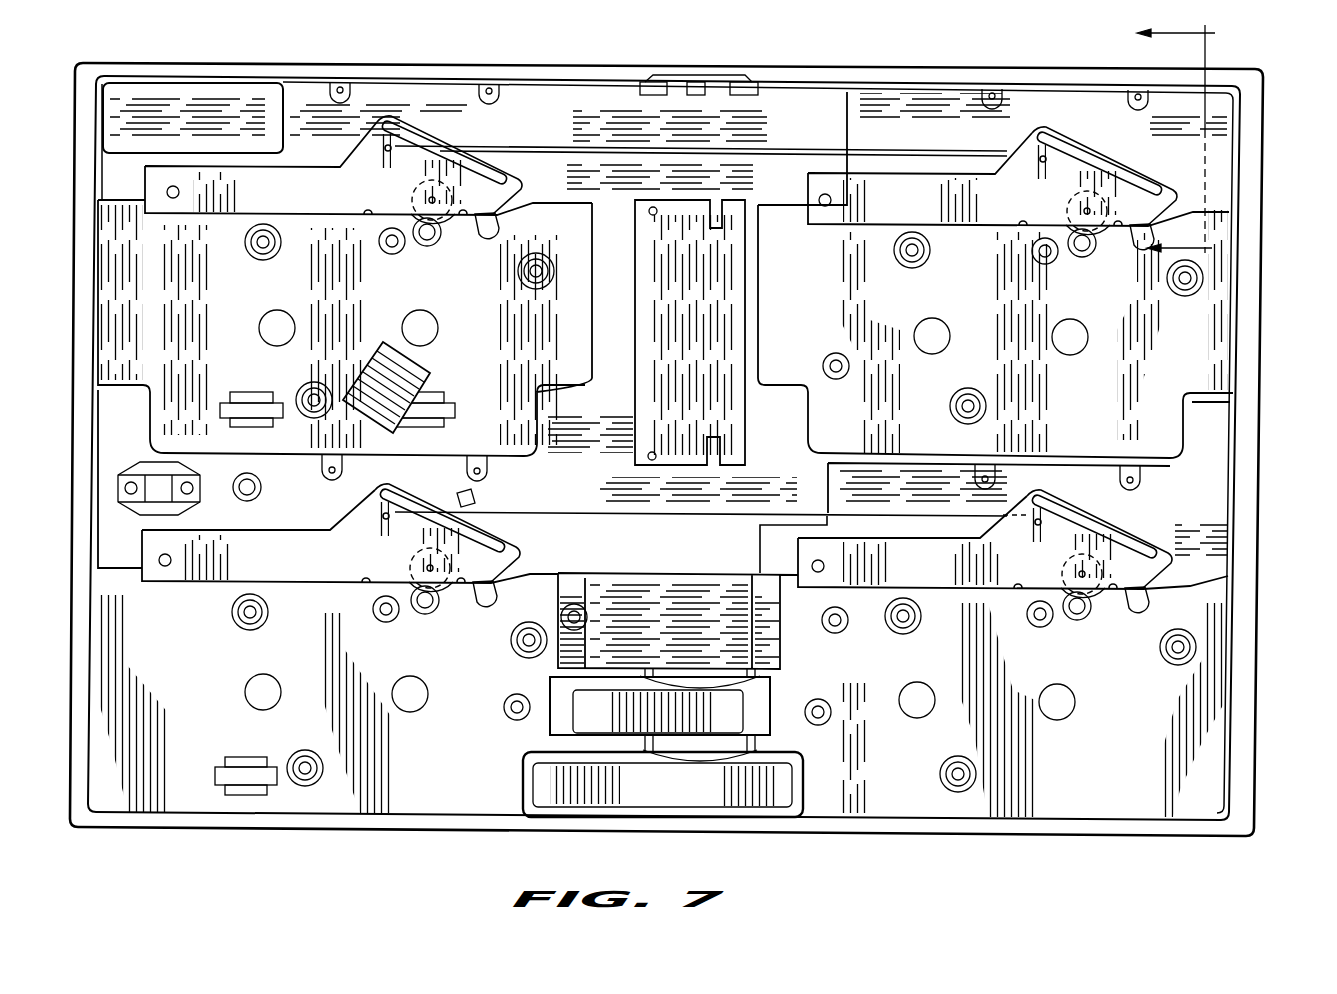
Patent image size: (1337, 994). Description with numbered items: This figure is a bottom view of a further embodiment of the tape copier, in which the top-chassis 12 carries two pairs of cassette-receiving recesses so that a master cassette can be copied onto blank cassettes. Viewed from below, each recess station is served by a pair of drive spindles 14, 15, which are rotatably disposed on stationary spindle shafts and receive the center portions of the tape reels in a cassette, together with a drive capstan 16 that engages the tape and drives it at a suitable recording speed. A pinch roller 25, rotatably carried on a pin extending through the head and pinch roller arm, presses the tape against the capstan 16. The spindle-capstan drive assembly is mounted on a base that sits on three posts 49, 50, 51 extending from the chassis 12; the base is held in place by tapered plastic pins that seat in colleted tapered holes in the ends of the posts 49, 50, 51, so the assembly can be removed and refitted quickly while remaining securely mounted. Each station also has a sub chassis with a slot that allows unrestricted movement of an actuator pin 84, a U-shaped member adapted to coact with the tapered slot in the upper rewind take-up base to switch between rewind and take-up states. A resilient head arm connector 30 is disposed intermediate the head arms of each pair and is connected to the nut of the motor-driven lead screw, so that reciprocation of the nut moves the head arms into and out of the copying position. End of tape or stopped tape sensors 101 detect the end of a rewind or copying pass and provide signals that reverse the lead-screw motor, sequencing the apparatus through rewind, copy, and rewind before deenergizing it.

The top-chassis 12 is at (1263, 470).
The drive spindle 14 is at (244, 692).
The drive spindle 15 is at (408, 713).
The drive capstan 16 is at (424, 614).
The pinch roller 25 is at (437, 588).
The resilient connector 30 is at (553, 146).
The post 49 is at (231, 612).
The post 50 is at (527, 658).
The post 51 is at (290, 755).
The actuator pin 84 is at (500, 540).
The end of tape or stopped tape sensor 101 is at (440, 362).